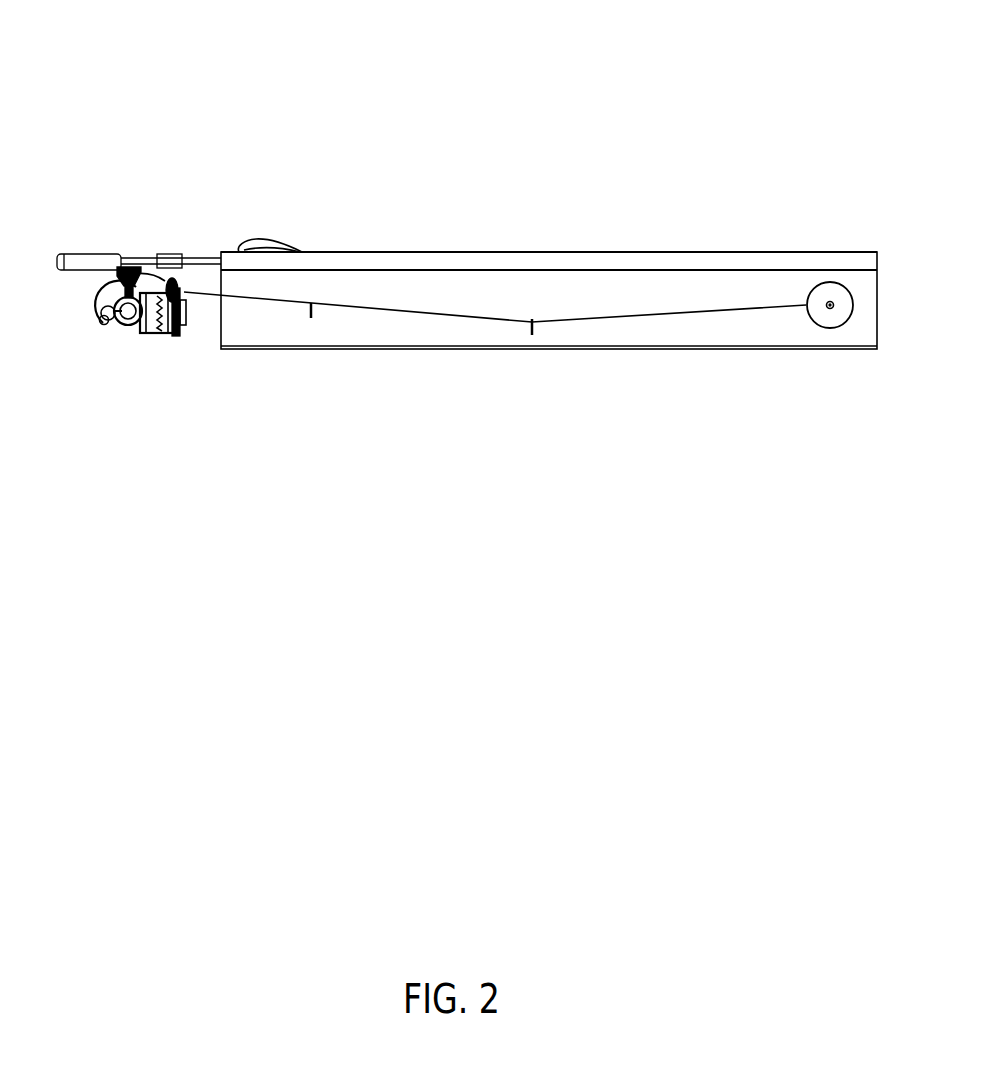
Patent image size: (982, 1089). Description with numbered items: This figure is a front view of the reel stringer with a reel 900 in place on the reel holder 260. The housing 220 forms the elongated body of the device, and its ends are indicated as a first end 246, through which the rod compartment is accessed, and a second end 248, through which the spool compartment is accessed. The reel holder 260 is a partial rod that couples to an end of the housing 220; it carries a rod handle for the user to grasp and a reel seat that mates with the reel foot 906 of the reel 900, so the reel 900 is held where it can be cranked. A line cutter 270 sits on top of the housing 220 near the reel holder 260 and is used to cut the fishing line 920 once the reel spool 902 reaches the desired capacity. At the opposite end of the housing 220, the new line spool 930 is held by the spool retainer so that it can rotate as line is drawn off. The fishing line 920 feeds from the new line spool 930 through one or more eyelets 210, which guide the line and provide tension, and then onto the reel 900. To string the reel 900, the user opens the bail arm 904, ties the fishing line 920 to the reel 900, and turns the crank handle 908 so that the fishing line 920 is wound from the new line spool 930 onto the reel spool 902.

The first end 246 is at (262, 95).
The second end 248 is at (836, 213).
The housing 220 is at (508, 253).
The eyelets 210 is at (312, 318).
The reel holder 260 is at (193, 258).
The line cutter 270 is at (258, 238).
The reel 900 is at (134, 369).
The reel spool 902 is at (179, 330).
The bail arm 904 is at (173, 330).
The reel foot 906 is at (120, 280).
The crank handle 908 is at (118, 321).
The fishing line 920 is at (600, 325).
The new line spool 930 is at (832, 318).